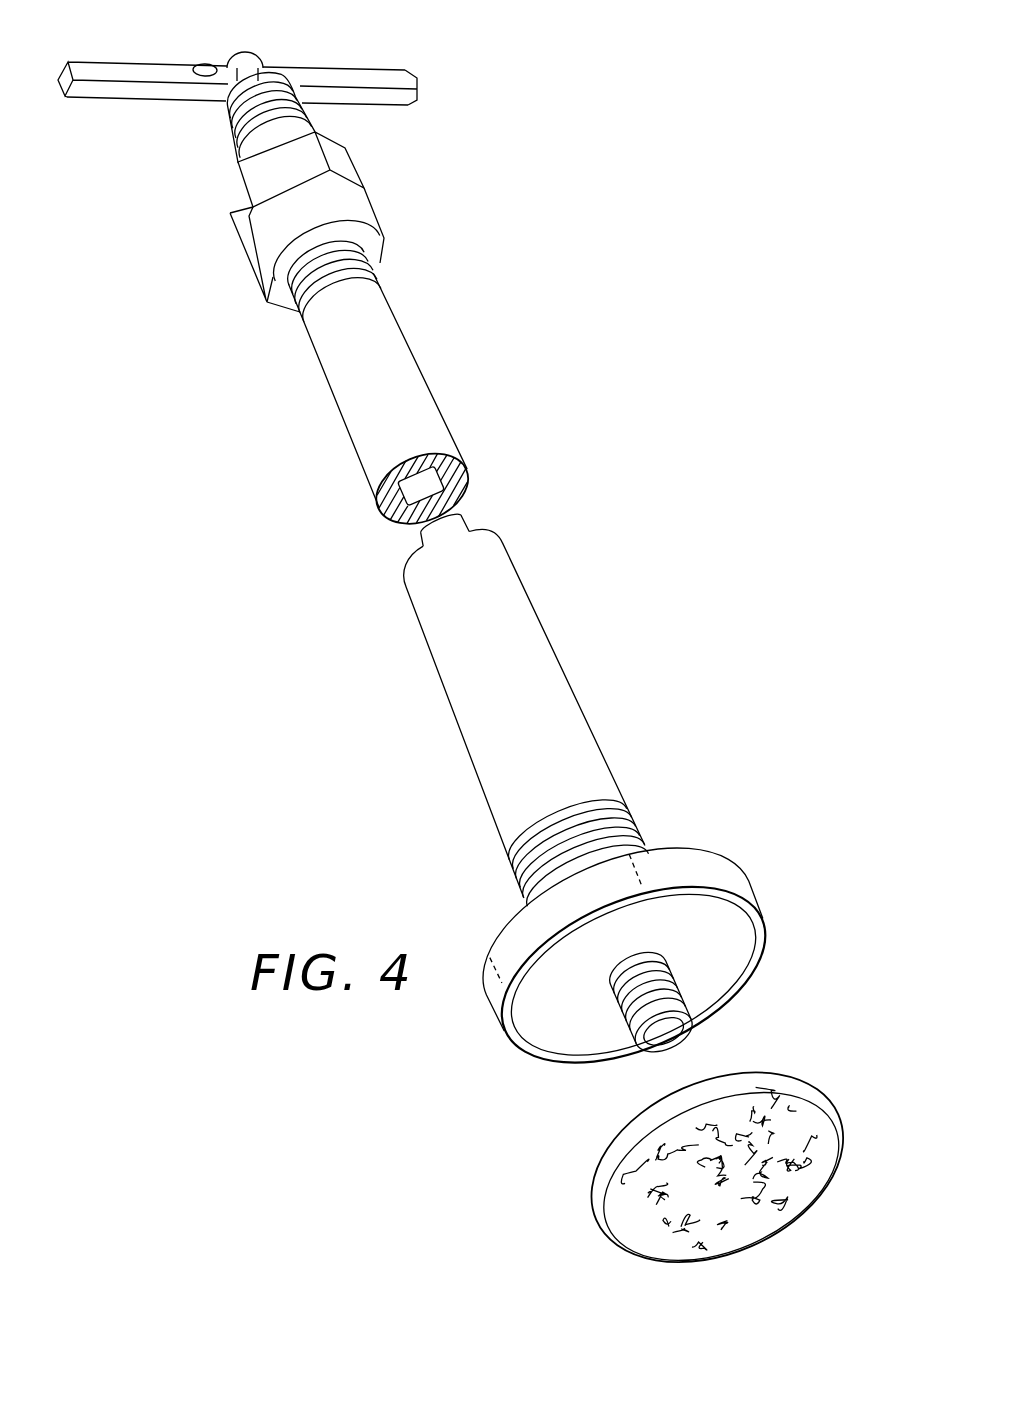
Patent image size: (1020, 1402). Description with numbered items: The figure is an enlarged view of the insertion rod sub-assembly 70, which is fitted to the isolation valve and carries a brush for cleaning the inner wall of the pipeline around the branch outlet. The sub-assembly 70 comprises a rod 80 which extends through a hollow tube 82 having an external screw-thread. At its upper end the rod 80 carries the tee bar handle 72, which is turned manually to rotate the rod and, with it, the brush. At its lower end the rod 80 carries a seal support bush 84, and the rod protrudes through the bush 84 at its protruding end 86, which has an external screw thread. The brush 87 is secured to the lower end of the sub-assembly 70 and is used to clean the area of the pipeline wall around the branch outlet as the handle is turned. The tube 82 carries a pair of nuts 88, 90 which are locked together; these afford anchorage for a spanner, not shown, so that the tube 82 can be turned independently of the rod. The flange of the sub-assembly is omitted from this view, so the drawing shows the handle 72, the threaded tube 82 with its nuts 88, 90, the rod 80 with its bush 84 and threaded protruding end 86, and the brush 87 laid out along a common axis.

The insertion rod sub-assembly 70 is at (458, 375).
The tee bar handle 72 is at (140, 63).
The rod 80 is at (413, 485).
The hollow tube 82 is at (490, 743).
The seal support bush 84 is at (542, 1013).
The protruding end of rod 86 is at (625, 1018).
The brush 87 is at (617, 1240).
The nut 88 is at (258, 262).
The nut 90 is at (236, 215).